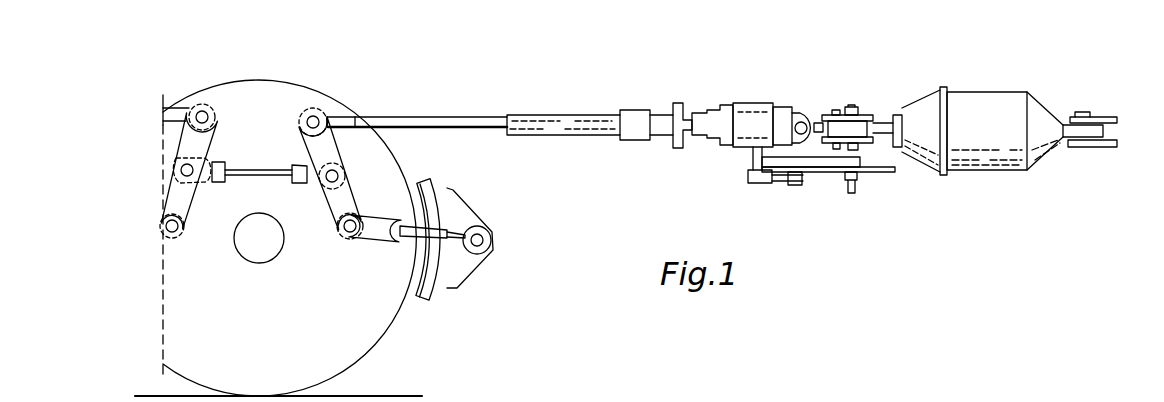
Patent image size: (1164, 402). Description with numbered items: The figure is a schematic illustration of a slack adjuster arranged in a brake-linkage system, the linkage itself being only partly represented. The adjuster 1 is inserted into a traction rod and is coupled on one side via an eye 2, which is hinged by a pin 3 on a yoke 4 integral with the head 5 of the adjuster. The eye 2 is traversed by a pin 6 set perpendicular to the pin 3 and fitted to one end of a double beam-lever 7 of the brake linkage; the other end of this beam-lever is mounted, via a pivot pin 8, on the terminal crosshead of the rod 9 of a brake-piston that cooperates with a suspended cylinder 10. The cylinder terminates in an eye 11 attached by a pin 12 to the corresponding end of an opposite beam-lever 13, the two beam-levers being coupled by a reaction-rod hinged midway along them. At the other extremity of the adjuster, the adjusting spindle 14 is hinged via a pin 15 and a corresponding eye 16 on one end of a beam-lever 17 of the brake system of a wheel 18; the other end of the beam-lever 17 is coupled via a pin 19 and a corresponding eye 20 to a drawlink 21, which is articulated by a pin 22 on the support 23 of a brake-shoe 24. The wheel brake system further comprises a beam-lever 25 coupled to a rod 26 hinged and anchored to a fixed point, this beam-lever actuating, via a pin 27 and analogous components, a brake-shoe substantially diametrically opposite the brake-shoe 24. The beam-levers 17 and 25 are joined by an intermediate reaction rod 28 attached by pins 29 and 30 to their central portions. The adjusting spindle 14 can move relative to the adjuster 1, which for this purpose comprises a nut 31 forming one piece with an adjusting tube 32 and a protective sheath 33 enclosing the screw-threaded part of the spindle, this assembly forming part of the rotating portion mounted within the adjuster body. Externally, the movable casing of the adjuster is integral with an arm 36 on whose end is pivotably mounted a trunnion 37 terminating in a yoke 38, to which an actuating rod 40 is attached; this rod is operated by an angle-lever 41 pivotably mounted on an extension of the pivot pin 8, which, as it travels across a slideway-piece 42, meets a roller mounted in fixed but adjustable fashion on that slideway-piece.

The adjuster 1 is at (738, 105).
The eye 2 is at (819, 124).
The pin 3 is at (803, 121).
The yoke 4 is at (812, 166).
The head 5 is at (782, 108).
The pin 6 is at (842, 106).
The double beam-lever 7 is at (881, 121).
The pivot pin 8 is at (865, 117).
The rod 9 is at (899, 112).
The suspended cylinder 10 is at (968, 98).
The eye 11 is at (1065, 124).
The pin 12 is at (1083, 113).
The beam-lever 13 is at (1113, 120).
The adjusting spindle 14 is at (452, 120).
The pin 15 is at (340, 113).
The eye 16 is at (315, 118).
The beam-lever 17 is at (334, 153).
The wheel 18 is at (283, 90).
The pin 19 is at (351, 238).
The eye 20 is at (360, 216).
The drawlink 21 is at (389, 240).
The pin 22 is at (488, 237).
The support 23 is at (463, 212).
The brake-shoe 24 is at (438, 188).
The beam-lever 25 is at (217, 128).
The rod 26 is at (177, 112).
The pin 27 is at (166, 231).
The intermediate reaction rod 28 is at (253, 173).
The pin 29 is at (180, 170).
The pin 30 is at (327, 183).
The nut 31 is at (635, 112).
The adjusting tube 32 is at (664, 118).
The protective sheath 33 is at (560, 117).
The arm 36 is at (750, 158).
The trunnion 37 is at (750, 180).
The yoke 38 is at (787, 182).
The actuating rod 40 is at (800, 185).
The angle-lever 41 is at (851, 193).
The slideway-piece 42 is at (887, 172).